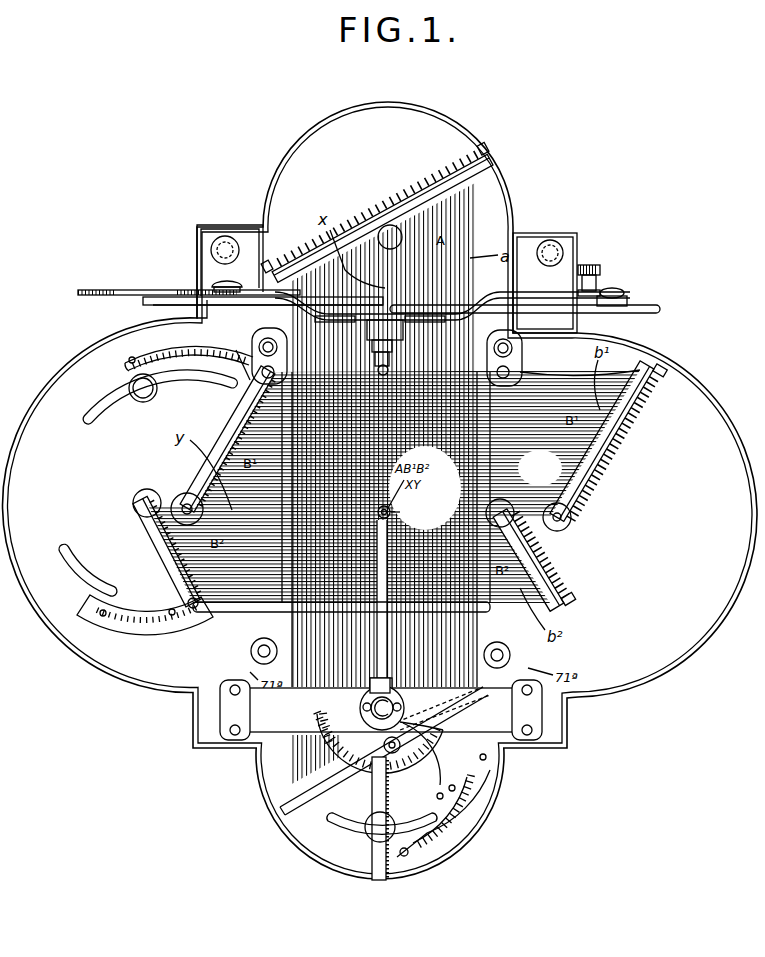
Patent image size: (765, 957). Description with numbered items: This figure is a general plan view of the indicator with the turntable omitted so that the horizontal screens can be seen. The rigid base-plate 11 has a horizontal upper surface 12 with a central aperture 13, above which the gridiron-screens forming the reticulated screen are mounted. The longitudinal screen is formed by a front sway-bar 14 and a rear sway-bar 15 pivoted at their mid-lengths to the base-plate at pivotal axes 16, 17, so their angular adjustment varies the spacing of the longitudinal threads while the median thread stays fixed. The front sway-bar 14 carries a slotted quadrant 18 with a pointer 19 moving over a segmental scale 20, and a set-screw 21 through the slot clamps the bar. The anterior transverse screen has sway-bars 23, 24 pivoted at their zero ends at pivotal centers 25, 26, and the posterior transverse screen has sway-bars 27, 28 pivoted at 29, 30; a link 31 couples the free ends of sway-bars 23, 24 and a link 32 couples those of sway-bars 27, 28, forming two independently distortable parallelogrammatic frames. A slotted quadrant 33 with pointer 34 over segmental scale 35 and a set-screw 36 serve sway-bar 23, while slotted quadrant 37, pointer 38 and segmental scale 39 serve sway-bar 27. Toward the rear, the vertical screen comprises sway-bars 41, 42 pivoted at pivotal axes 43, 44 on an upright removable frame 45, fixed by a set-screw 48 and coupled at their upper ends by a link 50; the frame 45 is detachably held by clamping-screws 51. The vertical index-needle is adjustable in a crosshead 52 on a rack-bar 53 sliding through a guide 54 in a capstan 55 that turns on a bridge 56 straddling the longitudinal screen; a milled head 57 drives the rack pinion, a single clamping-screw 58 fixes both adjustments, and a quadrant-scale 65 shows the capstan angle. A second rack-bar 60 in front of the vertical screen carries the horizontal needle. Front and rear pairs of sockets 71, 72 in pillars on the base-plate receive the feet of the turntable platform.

The base-plate 11 is at (660, 665).
The horizontal upper surface 12 is at (699, 528).
The central aperture 13 is at (482, 612).
The front sway-bar 14 is at (340, 775).
The sway-bar 15 is at (440, 183).
The pivotal axis 16 is at (414, 708).
The pivotal axis 17 is at (388, 225).
The slotted quadrant 18 is at (338, 828).
The pointer 19 is at (448, 798).
The segmental scale 20 is at (445, 830).
The set-screw 21 is at (372, 836).
The sway-bar 23 is at (218, 430).
The sway-bar 24 is at (622, 452).
The pivotal center 25 is at (185, 505).
The pivotal center 26 is at (560, 522).
The sway-bar 27 is at (152, 551).
The sway-bar 28 is at (565, 570).
The pivotal center 29 is at (147, 495).
The pivotal center 30 is at (508, 505).
The link 31 is at (547, 372).
The link 32 is at (265, 607).
The slotted quadrant 33 is at (112, 418).
The pointer 34 is at (238, 352).
The segmental scale 35 is at (205, 362).
The set-screw 36 is at (150, 398).
The slotted quadrant 37 is at (64, 565).
The pointer 38 is at (182, 618).
The segmental scale 39 is at (152, 620).
The sway-bar 41 is at (172, 297).
The sway-bar 42 is at (635, 310).
The pivotal axis 43 is at (212, 282).
The pivotal axis 44 is at (605, 289).
The upright removable frame 45 is at (498, 295).
The set-screw 48 is at (590, 264).
The link 50 is at (495, 313).
The clamping-screws 51 is at (212, 248).
The crosshead 52 is at (424, 516).
The rack-bar 53 is at (388, 798).
The guide 54 is at (403, 694).
The capstan 55 is at (362, 705).
The bridge 56 is at (272, 720).
The milled head 57 is at (410, 760).
The clamping-screw 58 is at (398, 722).
The rack-bar 60 is at (403, 328).
The quadrant-scale 65 is at (316, 718).
The front pair of sockets 71 is at (251, 652).
The rear pair of sockets 72 is at (262, 370).